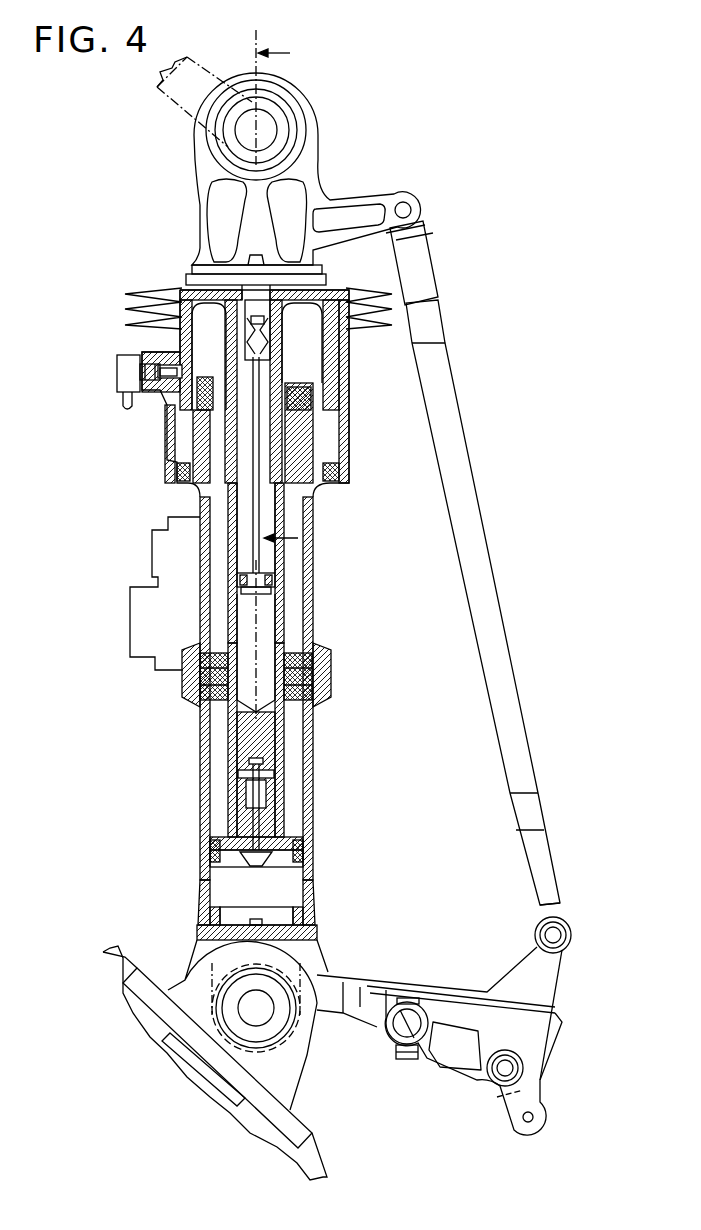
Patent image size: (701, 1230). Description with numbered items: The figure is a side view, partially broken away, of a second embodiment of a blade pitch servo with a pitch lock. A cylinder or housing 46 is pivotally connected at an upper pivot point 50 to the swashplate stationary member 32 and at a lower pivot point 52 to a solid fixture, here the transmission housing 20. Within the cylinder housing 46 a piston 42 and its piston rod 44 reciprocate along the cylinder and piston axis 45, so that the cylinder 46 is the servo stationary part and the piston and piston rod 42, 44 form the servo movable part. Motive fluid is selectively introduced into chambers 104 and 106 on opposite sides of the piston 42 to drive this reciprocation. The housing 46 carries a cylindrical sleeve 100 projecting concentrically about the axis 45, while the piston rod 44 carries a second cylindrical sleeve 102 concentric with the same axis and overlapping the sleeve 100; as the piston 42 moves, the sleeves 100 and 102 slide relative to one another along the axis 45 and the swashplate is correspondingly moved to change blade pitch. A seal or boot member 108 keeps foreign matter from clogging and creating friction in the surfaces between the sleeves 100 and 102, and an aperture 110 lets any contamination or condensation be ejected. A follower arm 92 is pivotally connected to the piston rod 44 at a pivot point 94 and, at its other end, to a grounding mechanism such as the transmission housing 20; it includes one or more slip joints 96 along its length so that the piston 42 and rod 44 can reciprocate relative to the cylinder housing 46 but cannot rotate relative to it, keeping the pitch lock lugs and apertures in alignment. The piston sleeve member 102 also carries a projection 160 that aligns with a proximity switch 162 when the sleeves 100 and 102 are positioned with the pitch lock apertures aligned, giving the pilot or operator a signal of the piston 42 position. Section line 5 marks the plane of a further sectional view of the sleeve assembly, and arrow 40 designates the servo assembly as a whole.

The section line 5- 5 is at (265, 289).
The transmission housing 20 is at (272, 1130).
The swashplate stationary member 32 is at (187, 93).
The shock absorber assembly 40 is at (327, 849).
The piston 42 is at (318, 598).
The piston rod 44 is at (288, 532).
The cylinder and piston axis 45 is at (257, 692).
The cylinder housing 46 is at (308, 758).
The pivot point 50 is at (276, 118).
The pivot point 52 is at (267, 1017).
The follower arm 92 is at (476, 538).
The pivot point 94 is at (405, 203).
The slip joint 96 is at (432, 262).
The cylindrical sleeve 100 is at (345, 425).
The cylindrical sleeve 102 is at (331, 350).
The chamber 104 is at (296, 508).
The chamber 106 is at (293, 623).
The seal or boot member 108 is at (358, 292).
The aperture 110 is at (340, 478).
The projection 160 is at (163, 365).
The proximity switch 162 is at (127, 373).